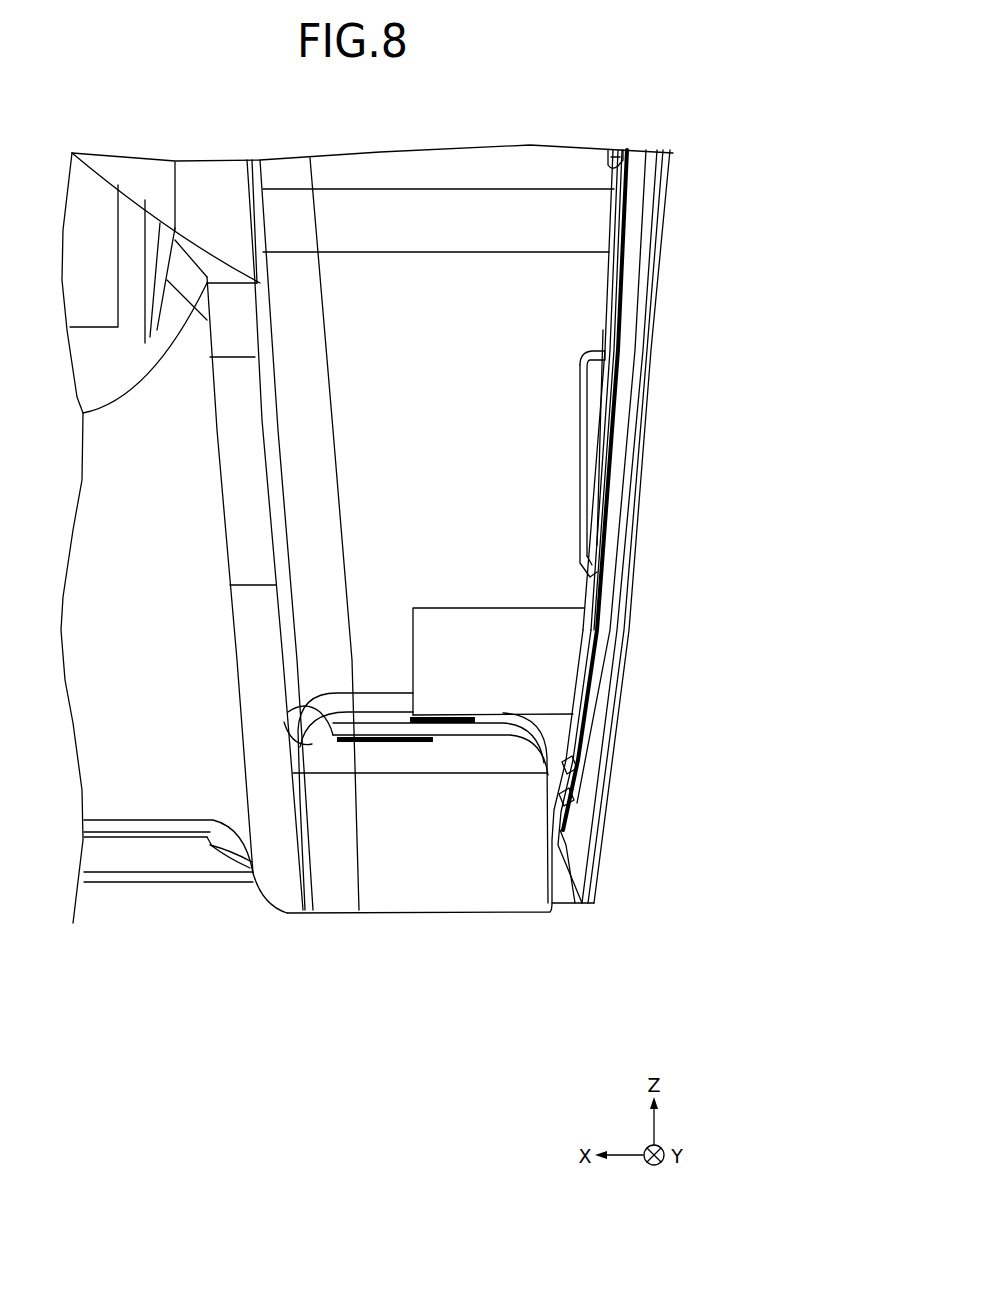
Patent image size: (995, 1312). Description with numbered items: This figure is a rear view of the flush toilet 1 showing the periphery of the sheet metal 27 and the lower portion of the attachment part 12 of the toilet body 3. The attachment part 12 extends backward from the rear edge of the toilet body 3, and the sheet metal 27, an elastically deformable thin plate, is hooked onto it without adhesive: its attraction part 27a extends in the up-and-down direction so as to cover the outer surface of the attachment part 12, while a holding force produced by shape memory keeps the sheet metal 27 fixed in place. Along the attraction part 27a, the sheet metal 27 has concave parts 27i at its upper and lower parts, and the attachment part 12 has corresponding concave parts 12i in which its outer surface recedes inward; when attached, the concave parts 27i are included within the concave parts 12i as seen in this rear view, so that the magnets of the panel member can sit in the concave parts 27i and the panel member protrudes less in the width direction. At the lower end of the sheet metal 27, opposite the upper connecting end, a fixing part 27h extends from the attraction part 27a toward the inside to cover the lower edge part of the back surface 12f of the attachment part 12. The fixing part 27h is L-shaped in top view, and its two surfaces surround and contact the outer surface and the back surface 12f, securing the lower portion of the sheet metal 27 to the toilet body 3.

The flush toilet 1 is at (626, 842).
The toilet body 3 is at (411, 916).
The attachment part 12 is at (418, 184).
The back surface 12f is at (530, 277).
The concave parts 12i is at (582, 471).
The sheet metal 27 is at (638, 247).
The attraction part 27a is at (622, 308).
The concave parts 27i is at (608, 427).
The fixing part 27h is at (555, 663).